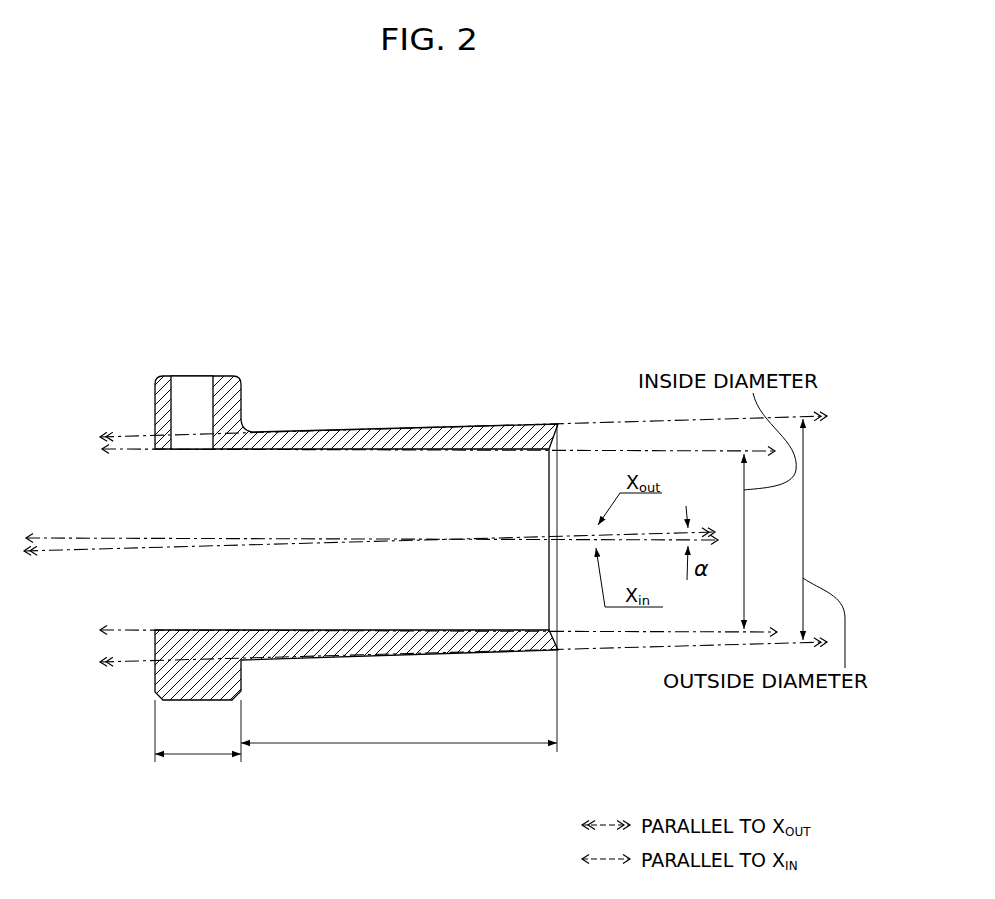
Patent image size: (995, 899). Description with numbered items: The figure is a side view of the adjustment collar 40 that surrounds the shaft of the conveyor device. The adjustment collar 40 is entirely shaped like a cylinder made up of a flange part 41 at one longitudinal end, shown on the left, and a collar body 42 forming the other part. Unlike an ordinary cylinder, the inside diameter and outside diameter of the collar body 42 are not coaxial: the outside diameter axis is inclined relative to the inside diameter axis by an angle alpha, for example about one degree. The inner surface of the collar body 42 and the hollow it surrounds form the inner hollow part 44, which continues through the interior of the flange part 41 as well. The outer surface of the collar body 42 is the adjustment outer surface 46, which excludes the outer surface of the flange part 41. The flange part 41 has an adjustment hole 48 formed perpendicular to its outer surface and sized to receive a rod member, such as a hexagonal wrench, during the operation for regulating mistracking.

The adjustment collar 40 is at (277, 306).
The flange part 41 is at (198, 742).
The collar body 42 is at (399, 599).
The inner hollow part 44 is at (369, 628).
The adjustment outer surface 46 is at (460, 427).
The adjustment hole 48 is at (203, 395).